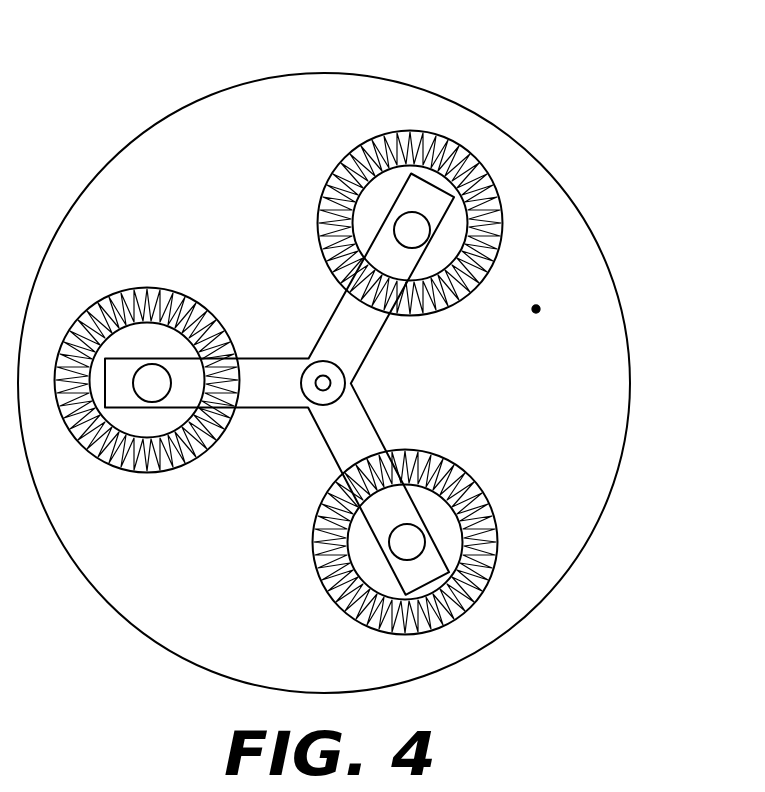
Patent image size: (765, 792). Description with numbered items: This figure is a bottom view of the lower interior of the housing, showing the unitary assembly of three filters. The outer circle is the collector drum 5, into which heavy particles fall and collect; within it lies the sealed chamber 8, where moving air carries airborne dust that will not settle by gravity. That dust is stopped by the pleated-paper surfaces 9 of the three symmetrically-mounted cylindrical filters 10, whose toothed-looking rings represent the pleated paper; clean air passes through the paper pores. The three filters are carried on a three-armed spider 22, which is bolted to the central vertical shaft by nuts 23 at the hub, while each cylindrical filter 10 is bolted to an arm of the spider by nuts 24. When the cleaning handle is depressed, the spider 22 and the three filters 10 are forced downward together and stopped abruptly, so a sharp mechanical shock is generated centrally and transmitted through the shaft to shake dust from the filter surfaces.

The collector drum 5 is at (627, 319).
The sealed chamber 8 is at (536, 309).
The pleated-paper surfaces 9 is at (113, 293).
The cylindrical filters 10 is at (321, 192).
The spider 22 is at (335, 311).
The nuts 23 is at (329, 405).
The nuts 24 is at (172, 386).